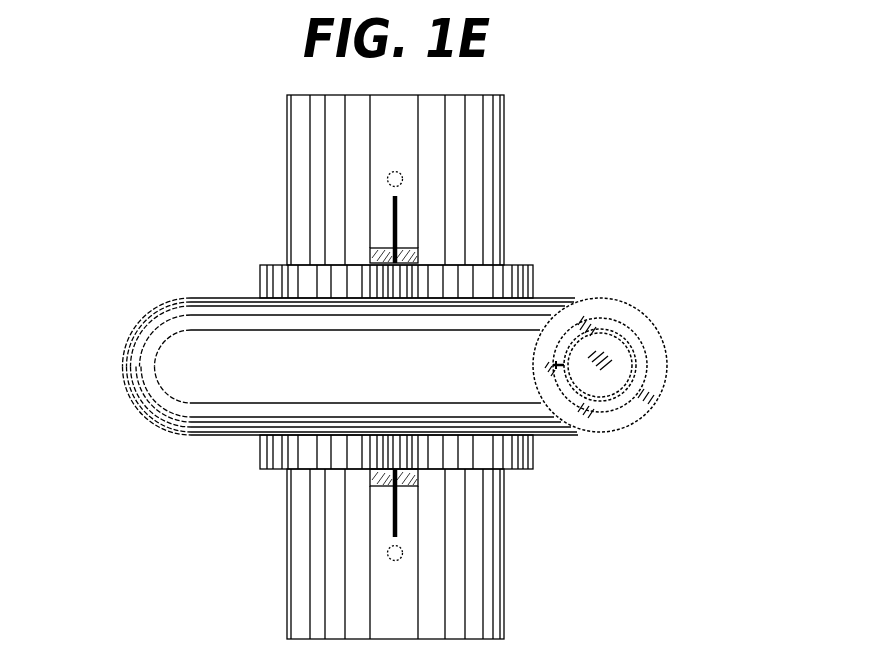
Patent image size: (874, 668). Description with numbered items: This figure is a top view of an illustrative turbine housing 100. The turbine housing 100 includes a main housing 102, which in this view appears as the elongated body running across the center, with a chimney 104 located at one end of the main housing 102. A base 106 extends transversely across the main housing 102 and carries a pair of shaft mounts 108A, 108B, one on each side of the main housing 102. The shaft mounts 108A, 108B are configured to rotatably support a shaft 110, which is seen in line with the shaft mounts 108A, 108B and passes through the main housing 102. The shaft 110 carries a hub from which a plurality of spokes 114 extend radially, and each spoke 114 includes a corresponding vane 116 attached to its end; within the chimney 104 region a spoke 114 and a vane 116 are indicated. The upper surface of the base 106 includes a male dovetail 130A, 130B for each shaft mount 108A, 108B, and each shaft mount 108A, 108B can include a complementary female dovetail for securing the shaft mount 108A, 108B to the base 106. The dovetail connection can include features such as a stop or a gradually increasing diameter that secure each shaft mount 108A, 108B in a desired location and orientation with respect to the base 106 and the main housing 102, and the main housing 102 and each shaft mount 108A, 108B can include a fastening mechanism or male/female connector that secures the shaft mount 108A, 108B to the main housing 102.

The turbine housing 100 is at (110, 136).
The main housing 102 is at (124, 362).
The chimney 104 is at (667, 358).
The base 106 is at (284, 150).
The shaft mount 108A is at (260, 452).
The shaft mount 108B is at (260, 280).
The shaft 110 is at (397, 224).
The spoke 114 is at (558, 367).
The vane 116 is at (627, 350).
The male dovetail 130A is at (418, 250).
The male dovetail 130B is at (418, 472).